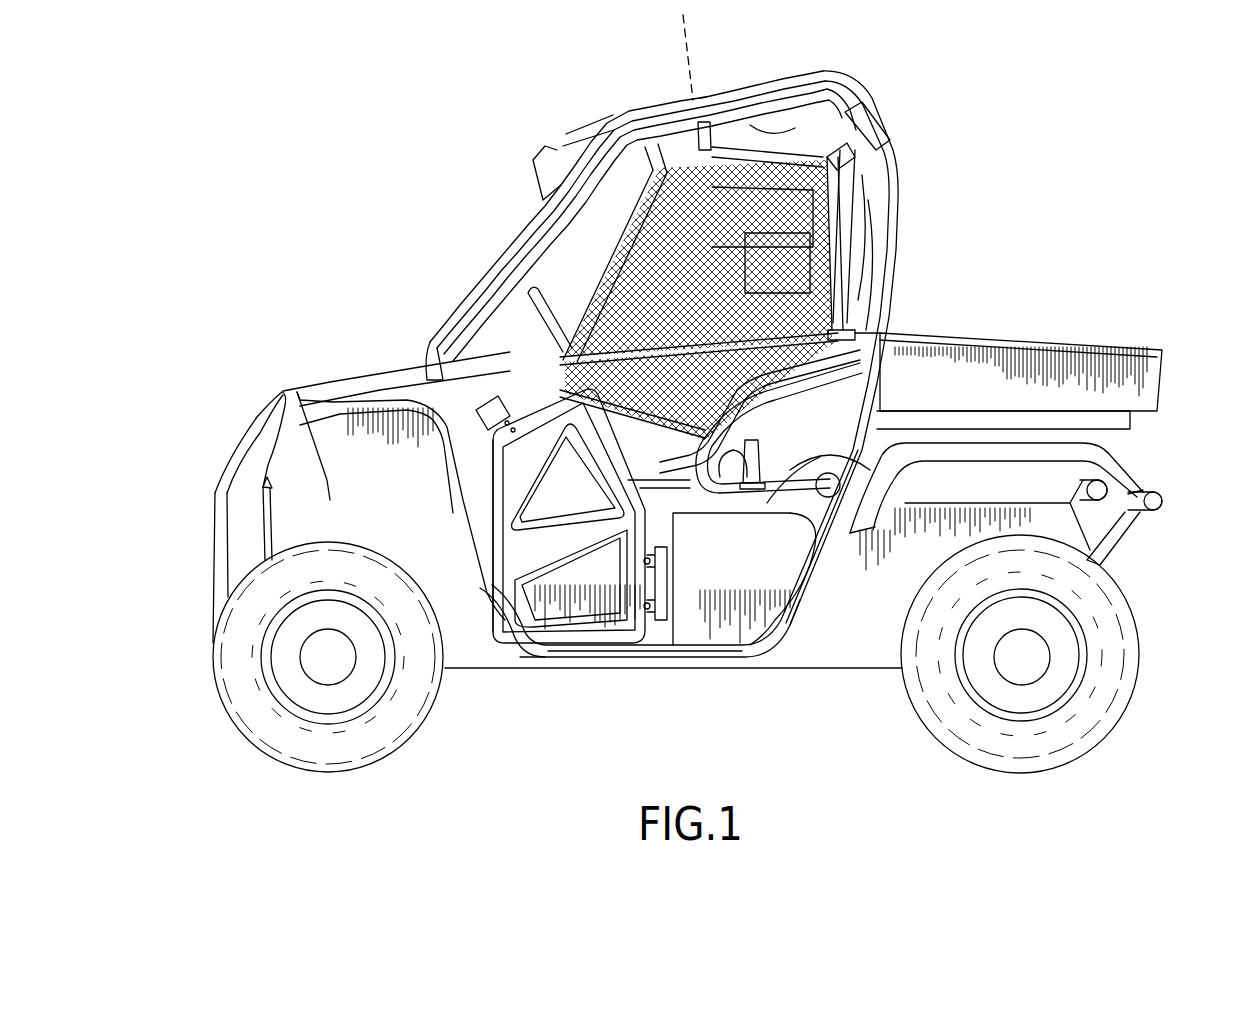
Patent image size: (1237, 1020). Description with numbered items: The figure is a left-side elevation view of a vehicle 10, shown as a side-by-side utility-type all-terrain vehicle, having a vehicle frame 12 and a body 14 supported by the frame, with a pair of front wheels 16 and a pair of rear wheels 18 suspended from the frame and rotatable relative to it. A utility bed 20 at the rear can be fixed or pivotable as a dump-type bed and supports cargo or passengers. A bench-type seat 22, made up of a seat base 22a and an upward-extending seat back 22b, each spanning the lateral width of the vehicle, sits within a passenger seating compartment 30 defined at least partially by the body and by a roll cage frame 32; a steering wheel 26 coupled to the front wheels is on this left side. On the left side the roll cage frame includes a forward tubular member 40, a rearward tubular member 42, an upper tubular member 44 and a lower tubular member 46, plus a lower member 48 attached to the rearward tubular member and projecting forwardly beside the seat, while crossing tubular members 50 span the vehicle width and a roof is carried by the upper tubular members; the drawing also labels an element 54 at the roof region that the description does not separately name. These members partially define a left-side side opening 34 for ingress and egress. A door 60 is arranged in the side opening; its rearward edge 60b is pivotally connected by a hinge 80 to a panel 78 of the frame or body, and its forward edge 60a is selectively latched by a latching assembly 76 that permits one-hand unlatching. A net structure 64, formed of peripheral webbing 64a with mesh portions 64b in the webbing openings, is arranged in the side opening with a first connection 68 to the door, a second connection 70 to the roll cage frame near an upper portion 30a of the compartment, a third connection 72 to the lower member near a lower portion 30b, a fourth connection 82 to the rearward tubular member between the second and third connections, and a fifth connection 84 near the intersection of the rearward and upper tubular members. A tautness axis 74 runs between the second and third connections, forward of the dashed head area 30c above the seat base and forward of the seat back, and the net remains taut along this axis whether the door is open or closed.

The vehicle 10 is at (305, 152).
The vehicle frame 12 is at (1123, 533).
The body 14 is at (845, 672).
The front wheels 16 is at (327, 747).
The rear wheels 18 is at (1037, 747).
The utility bed 20 is at (1070, 362).
The seat 22 is at (693, 507).
The seat base 22a is at (650, 490).
The seat back 22b is at (847, 410).
The steering wheel 26 is at (530, 300).
The passenger seating compartment 30 is at (580, 160).
The upper portion of passenger seating compartment 30a is at (793, 80).
The lower portion of passenger seating compartment 30b is at (893, 443).
The head area 30c is at (885, 228).
The roll cage frame 32 is at (897, 267).
The left-side side opening 34 is at (820, 480).
The forward tubular member 40 is at (483, 280).
The rearward tubular member 42 is at (895, 210).
The upper tubular member 44 is at (670, 123).
The lower tubular member 46 is at (653, 653).
The lower member 48 is at (795, 560).
The tubular members / roof 50 is at (853, 307).
The roof 54 is at (760, 93).
The door 60 is at (570, 608).
The forward edge 60a is at (500, 520).
The rearward edge 60b is at (627, 543).
The net structure 64 is at (853, 127).
The webbing 64a is at (627, 273).
The mesh portion 64b is at (627, 140).
The first connection 68 is at (470, 330).
The second connection 70 is at (720, 120).
The third connection 72 is at (743, 523).
The tautness axis 74 is at (670, 43).
The latching assembly 76 is at (477, 433).
The panel 78 is at (662, 633).
The hinge 80 is at (667, 590).
The fourth connection 82 is at (900, 333).
The fifth connection 84 is at (862, 155).